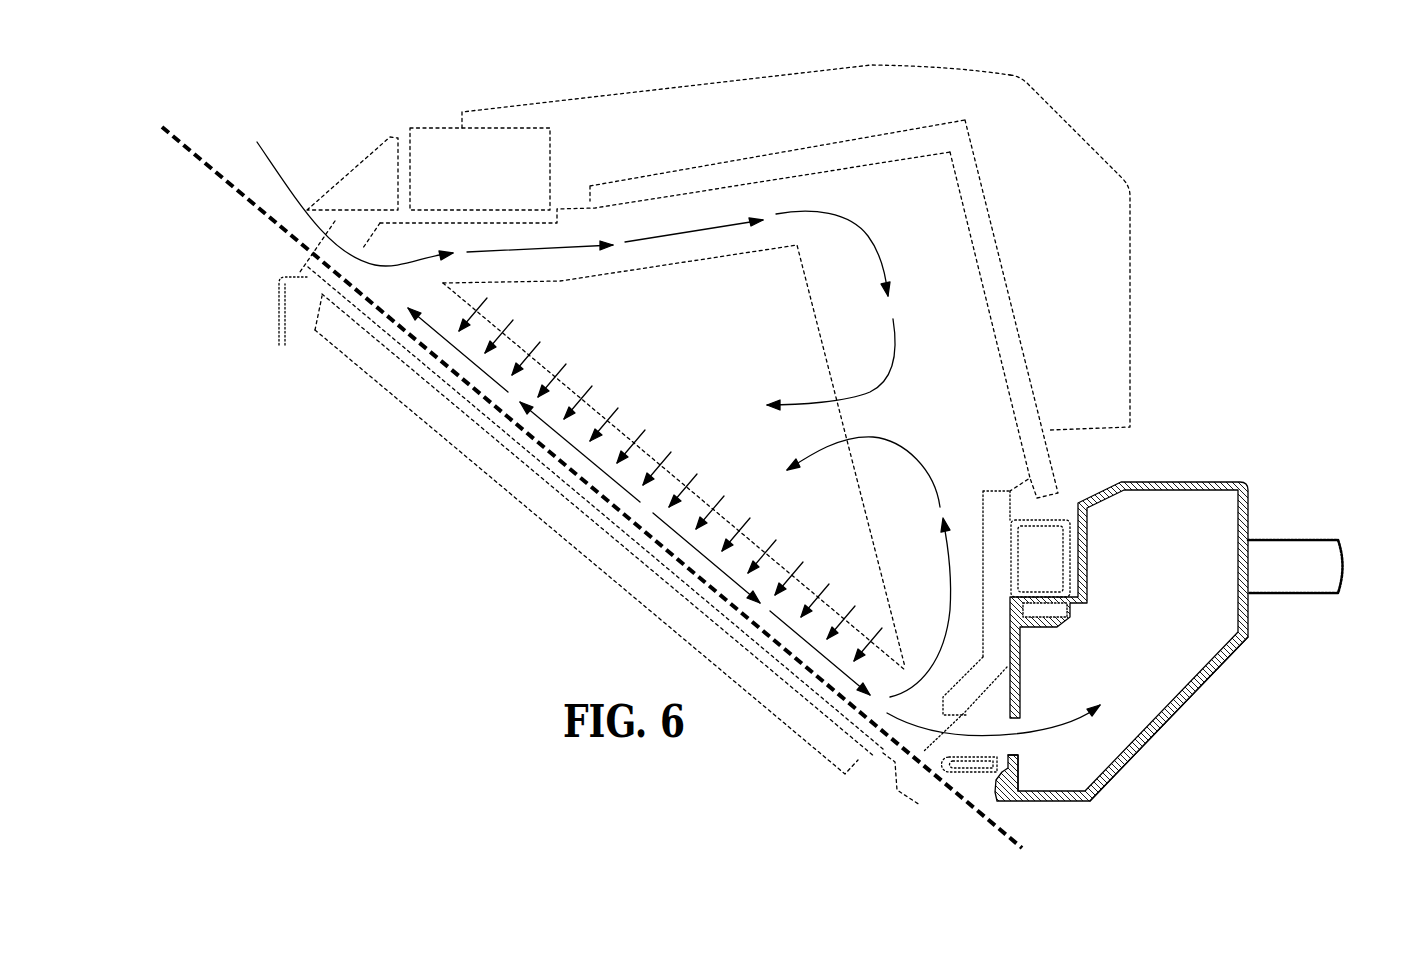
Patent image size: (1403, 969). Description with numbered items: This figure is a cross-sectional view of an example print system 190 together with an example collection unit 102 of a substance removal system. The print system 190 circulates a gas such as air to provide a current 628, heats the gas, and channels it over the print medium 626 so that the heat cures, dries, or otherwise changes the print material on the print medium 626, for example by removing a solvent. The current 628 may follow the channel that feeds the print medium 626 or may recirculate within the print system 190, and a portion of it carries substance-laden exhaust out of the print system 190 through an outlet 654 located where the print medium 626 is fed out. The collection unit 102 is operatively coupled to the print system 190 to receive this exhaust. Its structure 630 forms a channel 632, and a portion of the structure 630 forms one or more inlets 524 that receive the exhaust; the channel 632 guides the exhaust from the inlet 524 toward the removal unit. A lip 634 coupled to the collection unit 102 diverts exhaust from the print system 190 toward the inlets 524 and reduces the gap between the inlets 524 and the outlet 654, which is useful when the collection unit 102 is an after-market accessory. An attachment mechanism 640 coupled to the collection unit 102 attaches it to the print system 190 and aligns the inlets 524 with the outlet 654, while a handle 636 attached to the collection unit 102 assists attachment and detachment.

The collection unit 102 is at (1164, 731).
The print system 190 is at (1080, 128).
The inlet 524 is at (1010, 753).
The print medium 626 is at (1006, 821).
The current 628 is at (274, 166).
The structure 630 is at (1222, 668).
The channel 632 is at (1157, 632).
The lip 634 is at (955, 774).
The handle 636 is at (1298, 538).
The attachment mechanism 640 is at (1072, 552).
The outlet 654 is at (927, 680).